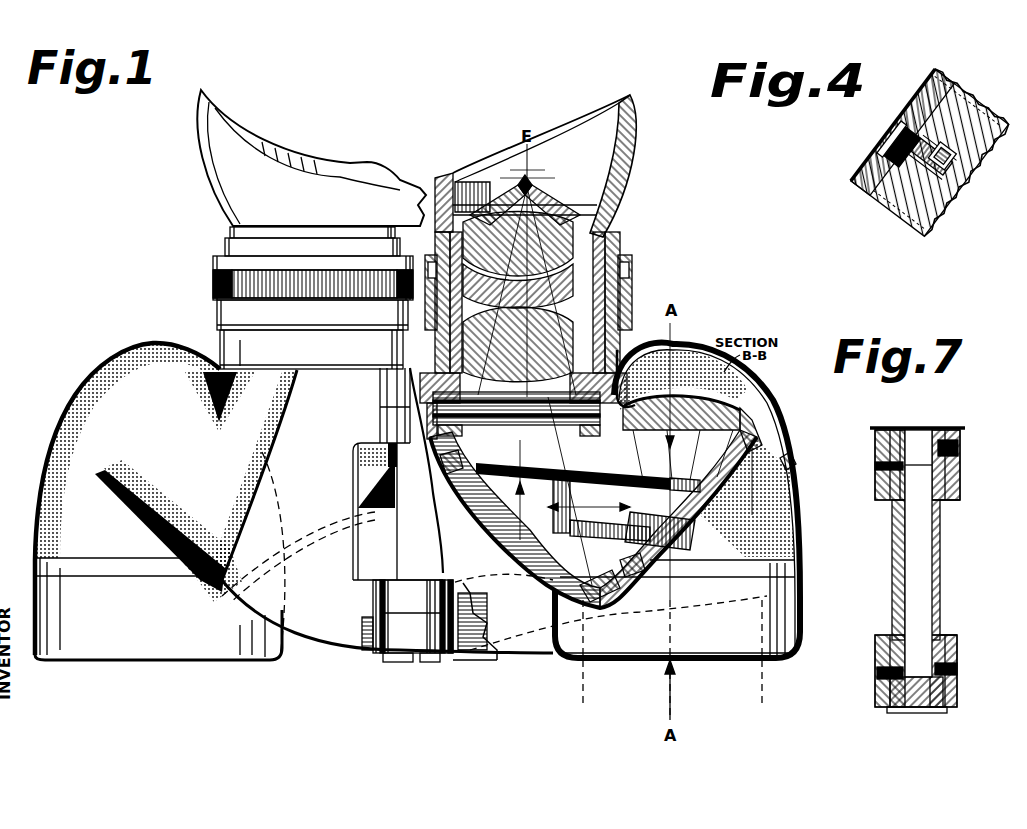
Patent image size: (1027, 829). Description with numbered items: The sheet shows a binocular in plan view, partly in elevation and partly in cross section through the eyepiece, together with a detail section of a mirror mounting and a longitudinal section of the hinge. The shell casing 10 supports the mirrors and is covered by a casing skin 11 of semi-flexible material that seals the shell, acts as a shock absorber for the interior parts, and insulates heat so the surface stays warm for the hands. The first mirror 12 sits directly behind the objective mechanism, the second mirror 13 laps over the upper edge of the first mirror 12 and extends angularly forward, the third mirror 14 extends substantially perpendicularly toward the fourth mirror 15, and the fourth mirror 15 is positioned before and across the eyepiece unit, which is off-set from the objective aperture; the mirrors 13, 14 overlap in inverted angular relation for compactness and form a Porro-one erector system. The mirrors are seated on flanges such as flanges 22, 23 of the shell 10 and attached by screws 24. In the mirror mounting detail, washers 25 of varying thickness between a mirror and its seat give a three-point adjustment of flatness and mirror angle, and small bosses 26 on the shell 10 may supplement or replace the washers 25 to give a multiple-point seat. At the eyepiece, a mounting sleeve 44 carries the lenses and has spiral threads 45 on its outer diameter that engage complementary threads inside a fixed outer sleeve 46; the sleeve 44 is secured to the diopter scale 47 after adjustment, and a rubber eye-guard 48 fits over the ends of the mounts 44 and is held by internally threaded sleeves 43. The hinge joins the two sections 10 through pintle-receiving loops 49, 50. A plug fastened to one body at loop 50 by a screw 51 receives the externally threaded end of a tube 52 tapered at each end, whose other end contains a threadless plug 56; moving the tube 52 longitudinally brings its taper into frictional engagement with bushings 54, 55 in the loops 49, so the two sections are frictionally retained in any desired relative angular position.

In FIG. 1, the shell casing 10 is at (768, 426).
In FIG. 4, the shell casing 10 is at (932, 92).
In FIG. 1, the casing skin 11 is at (45, 490).
In FIG. 4, the first mirror 12 is at (965, 100).
In FIG. 1, the second mirror 13 is at (752, 403).
In FIG. 1, the third mirror 14 is at (739, 485).
In FIG. 1, the fourth mirror 15 is at (496, 526).
In FIG. 1, the flange 22 is at (622, 582).
In FIG. 1, the flange 23 is at (546, 577).
In FIG. 1, the screws 24 is at (450, 474).
In FIG. 4, the screws 24 is at (966, 182).
In FIG. 4, the washers 25 is at (882, 150).
In FIG. 4, the bosses 26 is at (852, 177).
In FIG. 1, the internally threaded sleeve 43 is at (610, 215).
In FIG. 1, the mounting sleeve 44 is at (604, 246).
In FIG. 1, the spiral threads 45 is at (620, 308).
In FIG. 1, the fixed outer sleeve 46 is at (615, 348).
In FIG. 1, the diopter scale 47 is at (228, 298).
In FIG. 1, the rubber eye-guard 48 is at (210, 152).
In FIG. 1, the pintle-receiving loop 49 is at (402, 610).
In FIG. 7, the pintle-receiving loop 49 is at (876, 487).
In FIG. 1, the pintle-receiving loop 50 is at (372, 634).
In FIG. 7, the pintle-receiving loop 50 is at (876, 452).
In FIG. 7, the screw 51 is at (958, 447).
In FIG. 1, the tube 52 is at (405, 534).
In FIG. 7, the tube 52 is at (893, 563).
In FIG. 7, the bushing 54 is at (946, 503).
In FIG. 7, the bushing 55 is at (957, 642).
In FIG. 7, the threadless plug 56 is at (924, 713).